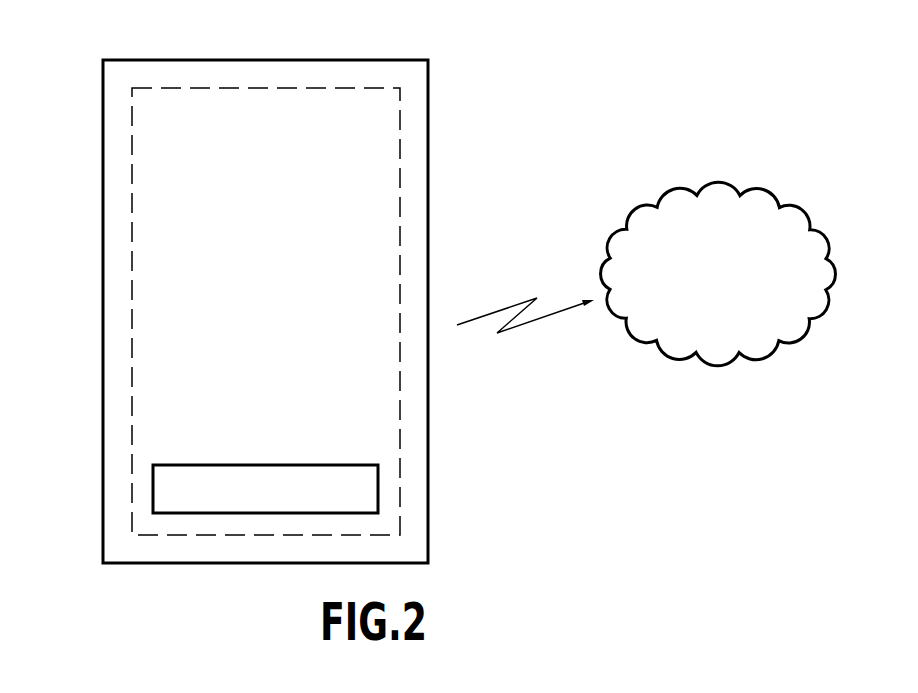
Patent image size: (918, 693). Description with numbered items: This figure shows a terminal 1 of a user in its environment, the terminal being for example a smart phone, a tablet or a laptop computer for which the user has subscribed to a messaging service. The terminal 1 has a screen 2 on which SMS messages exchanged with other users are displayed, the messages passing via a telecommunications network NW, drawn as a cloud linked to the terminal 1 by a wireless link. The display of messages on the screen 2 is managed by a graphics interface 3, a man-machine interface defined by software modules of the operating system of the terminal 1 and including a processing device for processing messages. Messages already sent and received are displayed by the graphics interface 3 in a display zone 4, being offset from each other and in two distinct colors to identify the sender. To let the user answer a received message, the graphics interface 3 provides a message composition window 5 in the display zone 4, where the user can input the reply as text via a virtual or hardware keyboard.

The terminal 1 is at (290, 289).
The screen 2 is at (298, 60).
The graphics interface 3 is at (216, 275).
The display zone 4 is at (168, 88).
The message composition window 5 is at (354, 465).
The telecommunications network NW is at (738, 288).